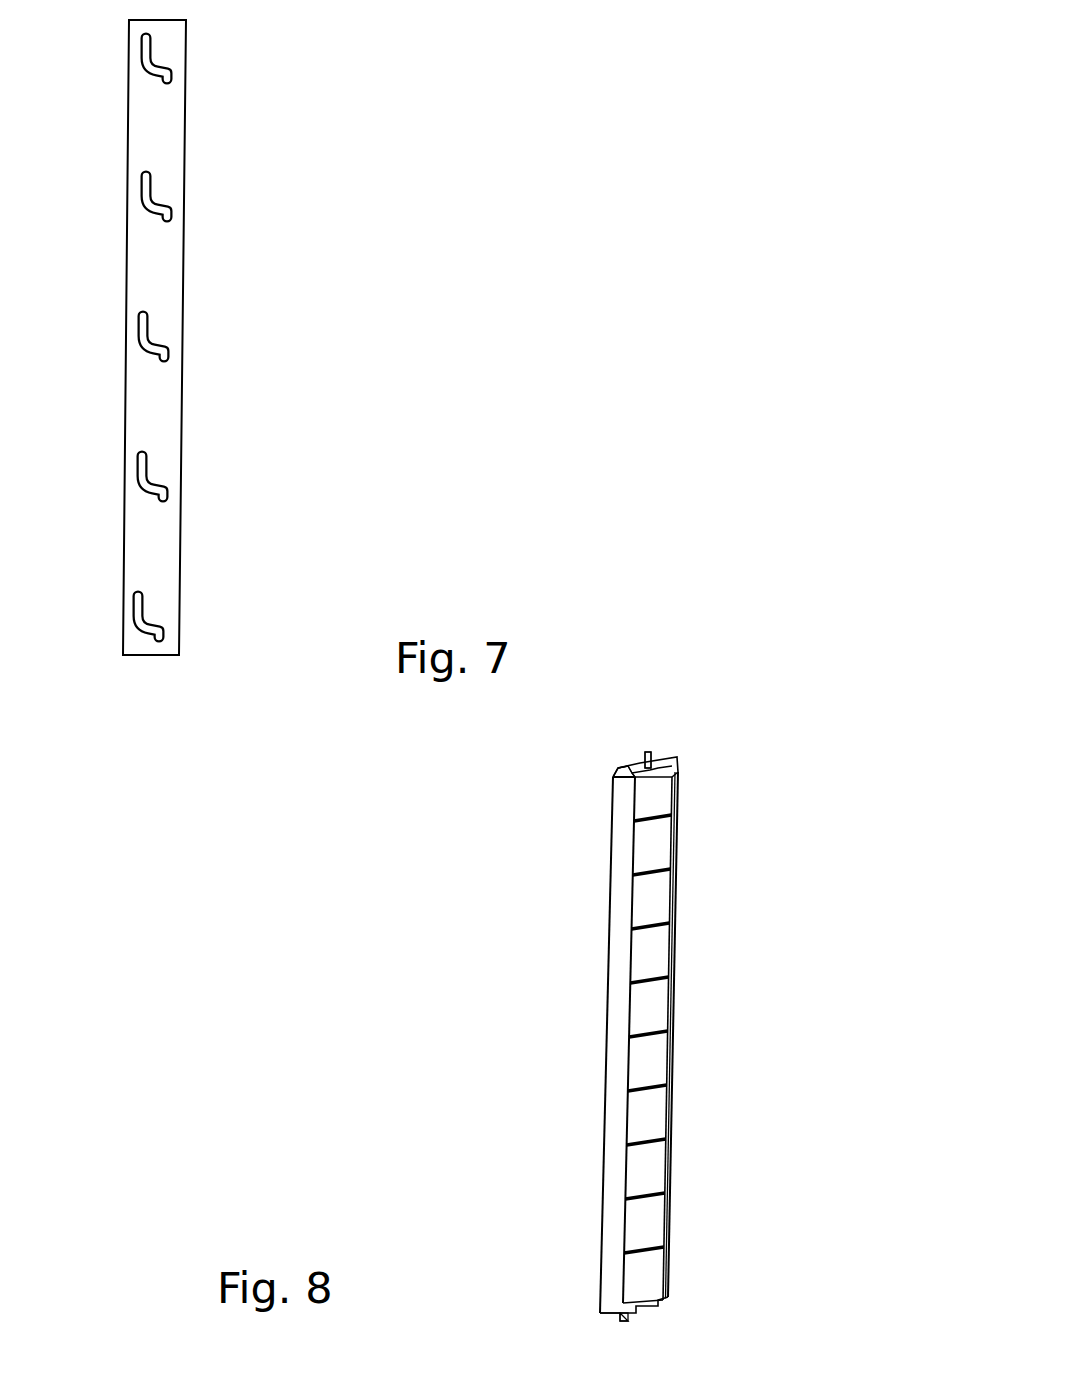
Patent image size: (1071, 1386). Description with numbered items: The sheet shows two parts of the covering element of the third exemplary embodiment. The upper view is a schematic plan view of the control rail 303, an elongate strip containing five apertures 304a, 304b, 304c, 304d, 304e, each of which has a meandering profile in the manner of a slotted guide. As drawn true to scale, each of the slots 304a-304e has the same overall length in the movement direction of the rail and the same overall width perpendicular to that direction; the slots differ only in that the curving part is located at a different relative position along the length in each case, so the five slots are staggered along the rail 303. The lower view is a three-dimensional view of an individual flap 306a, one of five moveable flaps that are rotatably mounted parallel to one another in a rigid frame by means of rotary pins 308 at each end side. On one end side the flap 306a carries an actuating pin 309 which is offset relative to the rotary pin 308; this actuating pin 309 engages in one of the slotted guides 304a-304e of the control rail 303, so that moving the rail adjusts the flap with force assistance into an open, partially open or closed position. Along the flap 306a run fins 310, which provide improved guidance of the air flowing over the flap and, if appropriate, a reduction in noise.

In FIG. 7, the control rail 303 is at (113, 662).
In FIG. 7, the aperture 304a is at (156, 593).
In FIG. 7, the aperture 304b is at (166, 450).
In FIG. 7, the aperture 304c is at (167, 319).
In FIG. 7, the aperture 304d is at (172, 186).
In FIG. 7, the aperture 304e is at (174, 63).
In FIG. 8, the flap 306a is at (751, 1201).
In FIG. 8, the rotary pin 308 is at (614, 791).
In FIG. 8, the actuating pin 309 is at (672, 769).
In FIG. 8, the fin 310 is at (680, 966).